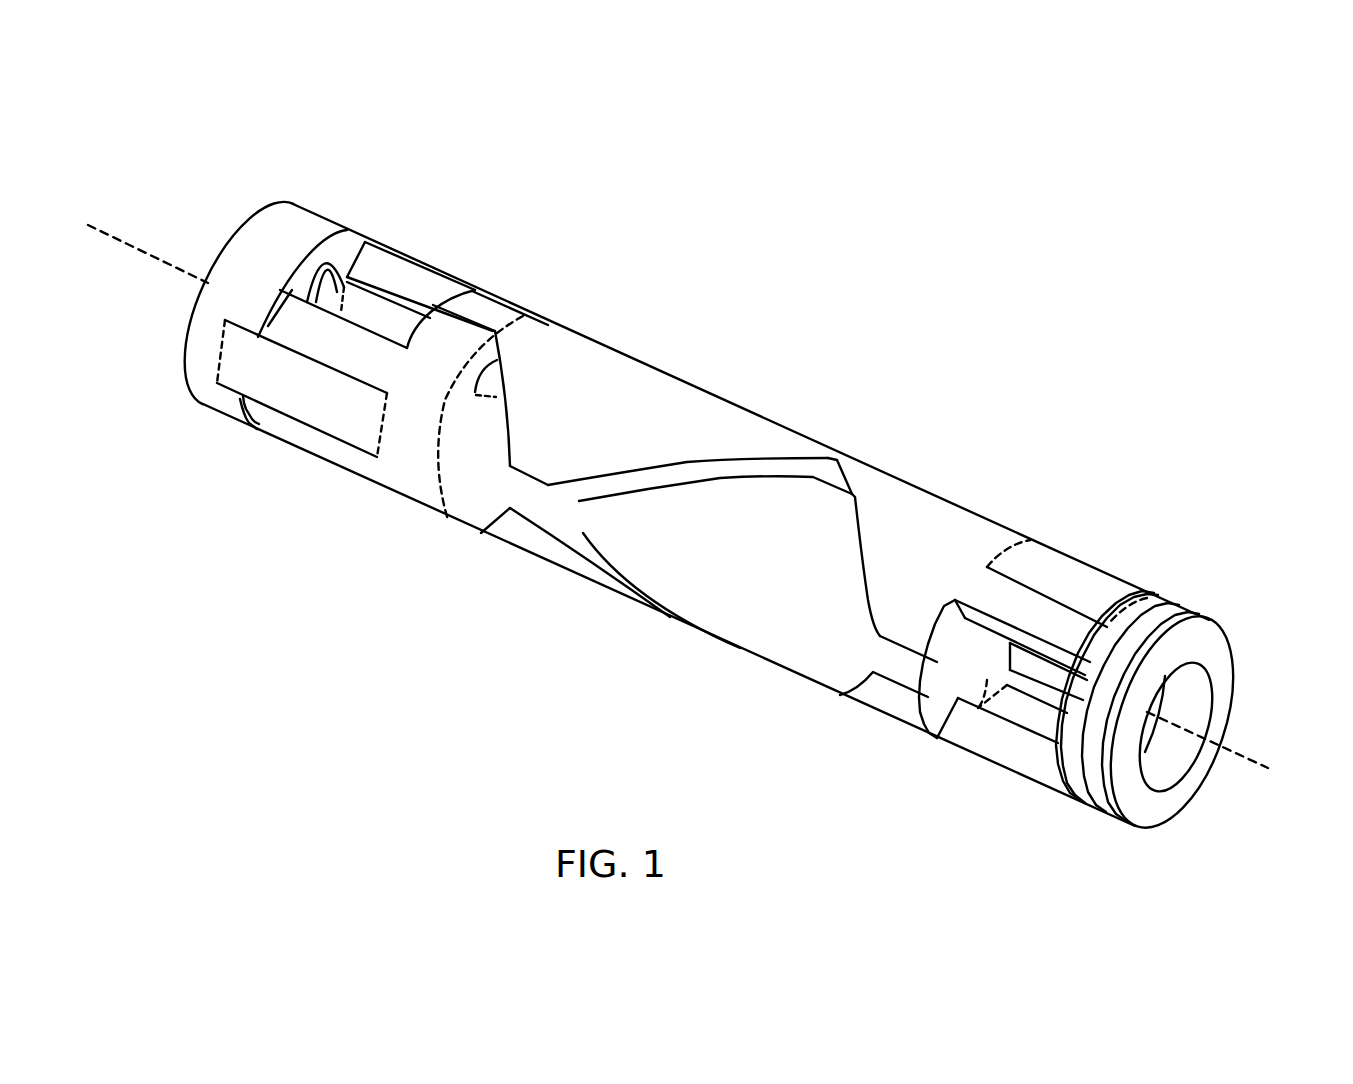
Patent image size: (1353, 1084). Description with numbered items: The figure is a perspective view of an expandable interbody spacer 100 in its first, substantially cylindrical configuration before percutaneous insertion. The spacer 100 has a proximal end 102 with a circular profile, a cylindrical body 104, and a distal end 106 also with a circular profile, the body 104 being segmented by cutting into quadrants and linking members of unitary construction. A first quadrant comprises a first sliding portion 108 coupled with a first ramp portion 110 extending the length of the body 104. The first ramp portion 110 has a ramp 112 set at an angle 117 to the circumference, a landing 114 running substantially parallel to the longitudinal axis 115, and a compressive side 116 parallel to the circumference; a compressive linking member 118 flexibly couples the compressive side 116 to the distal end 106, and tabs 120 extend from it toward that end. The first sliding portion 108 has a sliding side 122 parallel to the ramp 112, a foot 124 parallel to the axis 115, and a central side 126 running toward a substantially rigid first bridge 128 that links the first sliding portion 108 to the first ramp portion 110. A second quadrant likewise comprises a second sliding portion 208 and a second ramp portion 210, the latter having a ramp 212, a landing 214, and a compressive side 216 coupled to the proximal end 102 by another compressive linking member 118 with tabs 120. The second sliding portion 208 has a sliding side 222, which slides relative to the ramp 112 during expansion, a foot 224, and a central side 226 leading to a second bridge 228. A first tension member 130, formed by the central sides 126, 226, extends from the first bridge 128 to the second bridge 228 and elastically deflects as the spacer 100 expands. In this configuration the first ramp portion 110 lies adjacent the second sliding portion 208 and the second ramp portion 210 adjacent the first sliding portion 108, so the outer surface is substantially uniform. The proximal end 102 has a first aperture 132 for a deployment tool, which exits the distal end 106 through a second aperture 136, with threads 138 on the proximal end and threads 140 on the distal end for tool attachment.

The expandable interbody spacer 100 is at (897, 262).
The proximal end 102 is at (1145, 810).
The cylindrical body 104 is at (580, 684).
The distal end 106 is at (258, 247).
The first sliding portion 108 is at (730, 612).
The first ramp portion 110 is at (407, 477).
The ramp 112 is at (507, 427).
The landing 114 is at (482, 322).
The longitudinal axis 115 is at (150, 250).
The compressive side 116 is at (411, 340).
The angle 117 is at (497, 360).
The compressive linking member 118 is at (373, 317).
The tabs 120 is at (313, 345).
The sliding side 122 is at (866, 556).
The foot 124 is at (851, 468).
The central side 126 is at (683, 482).
The first bridge 128 is at (552, 513).
The first tension member 130 is at (727, 473).
The first aperture 132 is at (1197, 707).
The second aperture 136 is at (318, 297).
The threads 138 is at (1180, 617).
The threads 140 is at (300, 290).
The second sliding portion 208 is at (608, 370).
The second ramp portion 210 is at (928, 520).
The ramp 212 is at (866, 601).
The landing 214 is at (900, 650).
The compressive side 216 is at (953, 630).
The sliding side 222 is at (510, 458).
The foot 224 is at (523, 478).
The central side 226 is at (625, 480).
The second bridge 228 is at (841, 479).